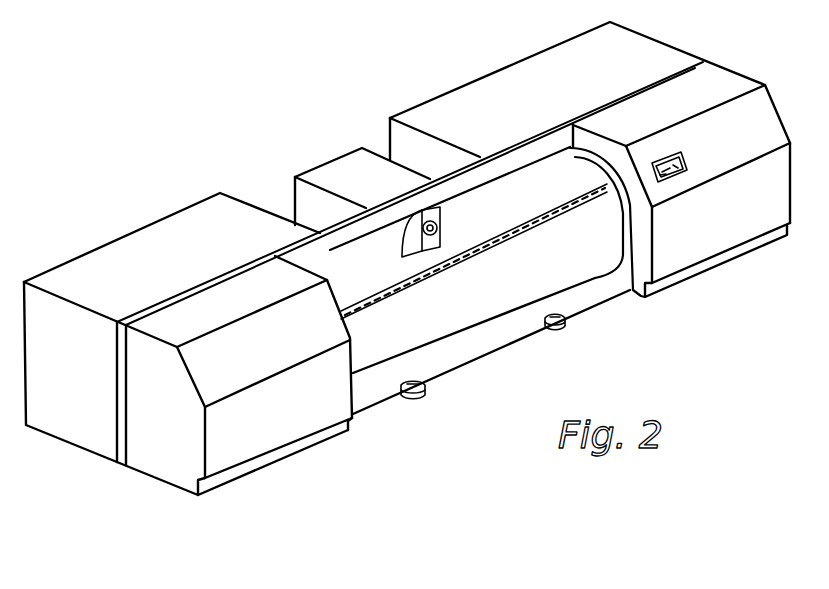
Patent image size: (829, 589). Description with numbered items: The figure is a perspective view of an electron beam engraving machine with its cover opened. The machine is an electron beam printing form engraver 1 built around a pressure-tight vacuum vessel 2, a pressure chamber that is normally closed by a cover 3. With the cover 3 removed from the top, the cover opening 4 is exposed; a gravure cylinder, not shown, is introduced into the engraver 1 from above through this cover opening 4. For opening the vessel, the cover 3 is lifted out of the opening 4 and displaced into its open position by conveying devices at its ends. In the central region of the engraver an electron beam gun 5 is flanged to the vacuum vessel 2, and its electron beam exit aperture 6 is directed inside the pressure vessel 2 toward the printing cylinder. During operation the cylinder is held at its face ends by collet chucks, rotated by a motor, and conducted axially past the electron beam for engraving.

The electron beam printing form engraver 1 is at (490, 92).
The pressure-tight vacuum vessel 2 is at (580, 297).
The cover 3 is at (430, 322).
The cover opening 4 is at (516, 240).
The electron beam gun 5 is at (337, 175).
The electron beam exit aperture 6 is at (443, 227).